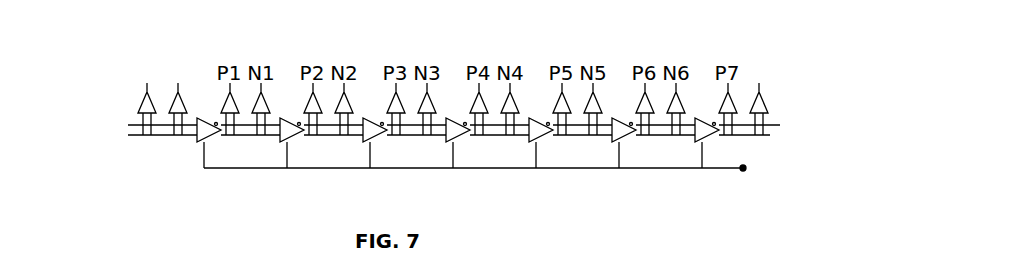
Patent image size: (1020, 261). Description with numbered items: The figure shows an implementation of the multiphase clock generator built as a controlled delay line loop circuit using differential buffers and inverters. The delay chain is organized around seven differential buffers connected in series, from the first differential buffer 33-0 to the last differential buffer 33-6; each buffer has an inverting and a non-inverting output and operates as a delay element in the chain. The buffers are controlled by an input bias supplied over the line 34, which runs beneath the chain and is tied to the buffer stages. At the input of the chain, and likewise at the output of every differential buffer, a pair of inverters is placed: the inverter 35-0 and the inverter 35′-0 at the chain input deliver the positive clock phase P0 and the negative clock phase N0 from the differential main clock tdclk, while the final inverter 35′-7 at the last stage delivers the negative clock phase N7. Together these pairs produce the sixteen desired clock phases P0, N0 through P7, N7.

The inverter 35-0 is at (141, 101).
The inverter 35′-0 is at (175, 96).
The inverter 35′-7 is at (765, 105).
The differential buffer 33-0 is at (219, 129).
The differential buffer 33-6 is at (717, 130).
The line 34 is at (747, 171).